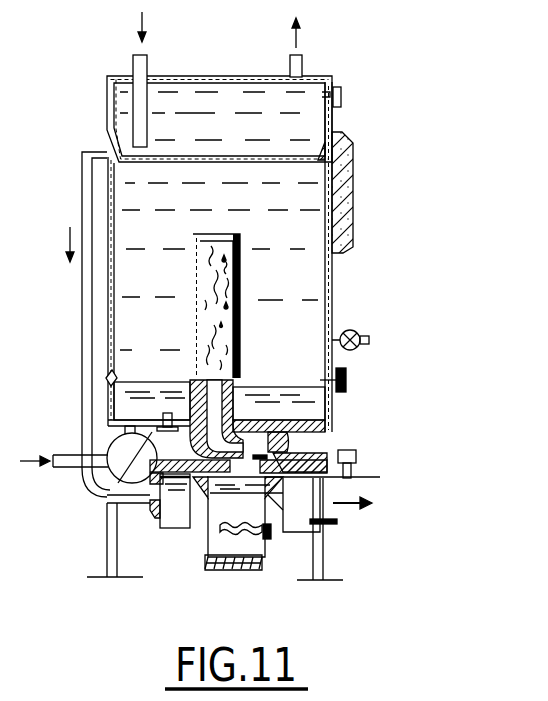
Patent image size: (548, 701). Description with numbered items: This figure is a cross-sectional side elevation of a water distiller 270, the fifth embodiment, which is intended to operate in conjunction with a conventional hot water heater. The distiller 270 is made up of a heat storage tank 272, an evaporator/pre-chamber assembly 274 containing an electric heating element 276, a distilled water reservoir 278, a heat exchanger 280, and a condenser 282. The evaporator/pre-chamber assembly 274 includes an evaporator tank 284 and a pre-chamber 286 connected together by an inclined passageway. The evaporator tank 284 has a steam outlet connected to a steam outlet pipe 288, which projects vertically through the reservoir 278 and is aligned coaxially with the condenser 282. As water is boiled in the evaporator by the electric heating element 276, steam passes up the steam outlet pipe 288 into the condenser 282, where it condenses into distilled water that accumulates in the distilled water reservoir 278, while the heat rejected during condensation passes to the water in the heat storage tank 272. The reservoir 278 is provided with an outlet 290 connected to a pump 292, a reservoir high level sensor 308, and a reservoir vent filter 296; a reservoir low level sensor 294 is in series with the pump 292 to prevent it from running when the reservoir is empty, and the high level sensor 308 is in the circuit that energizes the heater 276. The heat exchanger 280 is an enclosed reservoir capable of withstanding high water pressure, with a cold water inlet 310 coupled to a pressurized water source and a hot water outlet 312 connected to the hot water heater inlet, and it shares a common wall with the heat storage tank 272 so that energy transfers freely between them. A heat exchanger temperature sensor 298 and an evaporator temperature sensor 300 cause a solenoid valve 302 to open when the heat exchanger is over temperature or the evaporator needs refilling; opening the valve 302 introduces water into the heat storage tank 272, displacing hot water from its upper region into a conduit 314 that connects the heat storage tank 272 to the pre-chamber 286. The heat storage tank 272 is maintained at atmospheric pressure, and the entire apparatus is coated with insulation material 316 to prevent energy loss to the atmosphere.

The water distiller 270 is at (350, 74).
The heat storage tank 272 is at (332, 273).
The evaporator/pre-chamber assembly 274 is at (205, 552).
The electric heating element 276 is at (272, 533).
The distilled water reservoir 278 is at (340, 407).
The heat exchanger 280 is at (187, 76).
The condenser 282 is at (244, 294).
The evaporator tank 284 is at (262, 557).
The pre-chamber 286 is at (190, 530).
The steam outlet pipe 288 is at (198, 378).
The outlet 290 is at (130, 393).
The pump 292 is at (107, 447).
The reservoir low level sensor 294 is at (107, 497).
The reservoir vent filter 296 is at (349, 375).
The heat exchanger temperature sensor 298 is at (342, 107).
The evaporator temperature sensor 300 is at (288, 452).
The solenoid valve 302 is at (352, 328).
The reservoir high level sensor 308 is at (107, 372).
The cold water inlet 310 is at (132, 52).
The hot water outlet 312 is at (304, 53).
The conduit 314 is at (82, 180).
The insulation material 316 is at (343, 175).